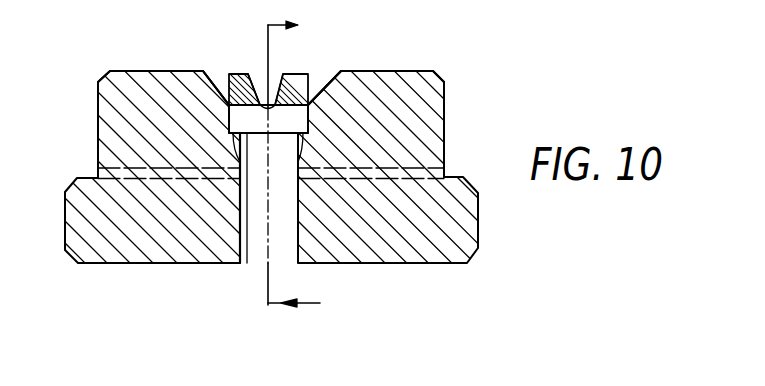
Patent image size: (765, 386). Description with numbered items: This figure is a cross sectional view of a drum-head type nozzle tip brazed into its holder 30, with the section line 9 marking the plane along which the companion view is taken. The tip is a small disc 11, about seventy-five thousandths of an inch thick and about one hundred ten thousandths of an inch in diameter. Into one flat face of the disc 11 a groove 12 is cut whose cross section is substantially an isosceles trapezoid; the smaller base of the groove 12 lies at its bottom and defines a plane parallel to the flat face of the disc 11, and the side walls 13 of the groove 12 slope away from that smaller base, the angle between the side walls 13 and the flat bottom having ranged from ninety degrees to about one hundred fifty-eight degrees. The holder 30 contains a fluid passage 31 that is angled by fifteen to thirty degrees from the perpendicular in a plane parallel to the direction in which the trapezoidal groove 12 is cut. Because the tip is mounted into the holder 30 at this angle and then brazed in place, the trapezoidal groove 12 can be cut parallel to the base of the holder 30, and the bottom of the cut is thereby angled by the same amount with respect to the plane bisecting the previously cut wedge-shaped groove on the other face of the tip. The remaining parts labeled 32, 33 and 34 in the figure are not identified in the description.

The section line 9- 9 is at (294, 167).
The disc 11 is at (303, 74).
The groove 12 is at (273, 88).
The side walls 13 is at (257, 100).
The holder 30 is at (460, 177).
The fluid passage 31 is at (252, 257).
The bore shoulder 32 is at (240, 179).
The raised boss 33 is at (141, 78).
The tapered surface 34 is at (228, 98).